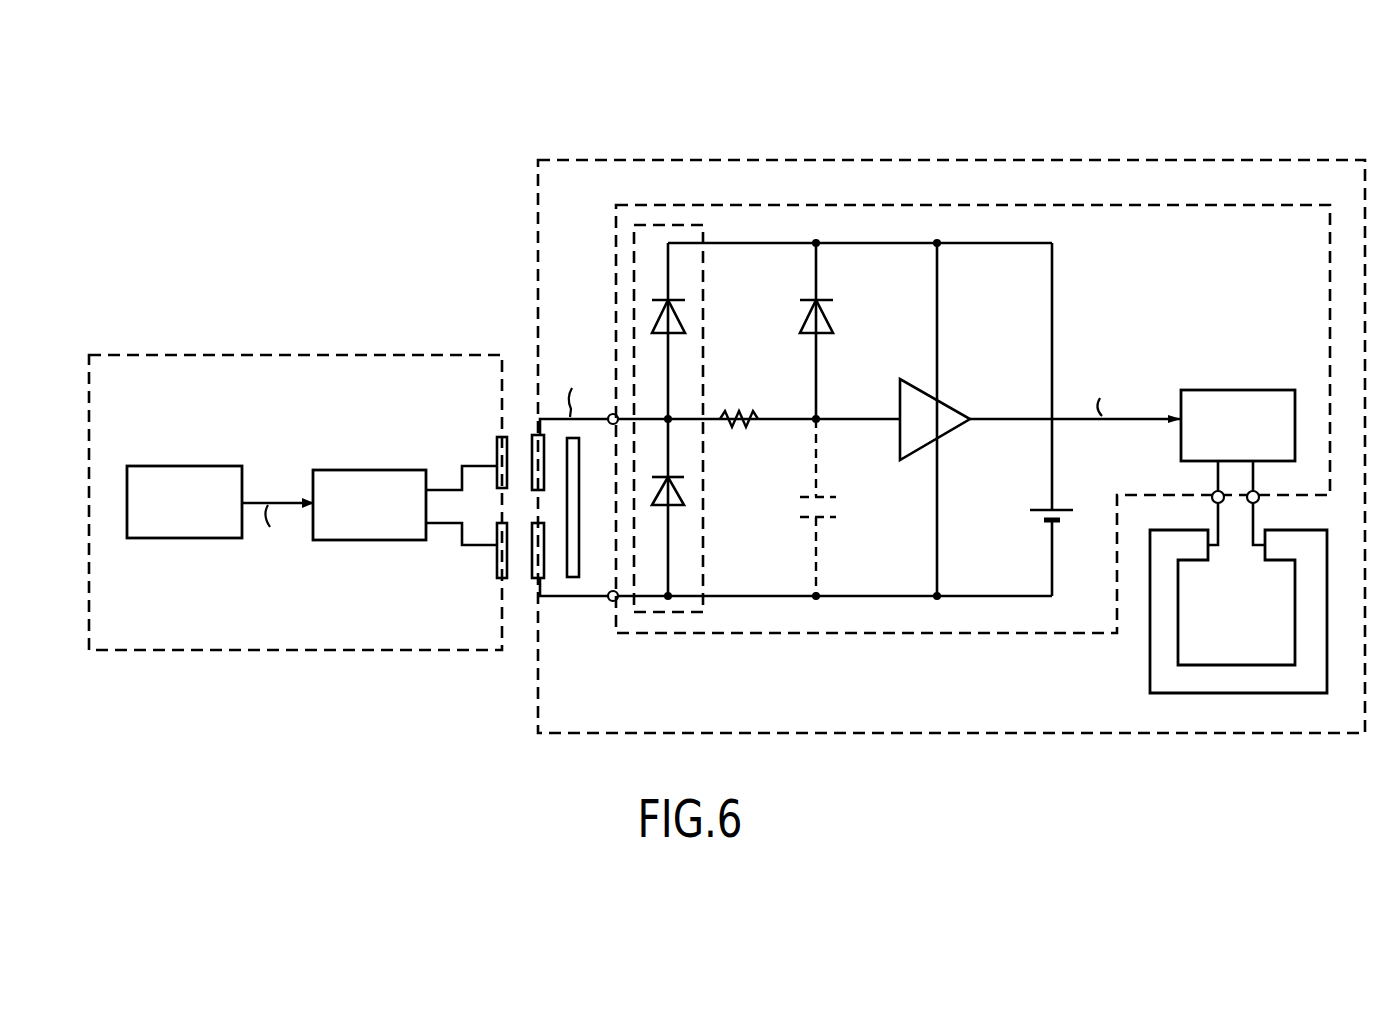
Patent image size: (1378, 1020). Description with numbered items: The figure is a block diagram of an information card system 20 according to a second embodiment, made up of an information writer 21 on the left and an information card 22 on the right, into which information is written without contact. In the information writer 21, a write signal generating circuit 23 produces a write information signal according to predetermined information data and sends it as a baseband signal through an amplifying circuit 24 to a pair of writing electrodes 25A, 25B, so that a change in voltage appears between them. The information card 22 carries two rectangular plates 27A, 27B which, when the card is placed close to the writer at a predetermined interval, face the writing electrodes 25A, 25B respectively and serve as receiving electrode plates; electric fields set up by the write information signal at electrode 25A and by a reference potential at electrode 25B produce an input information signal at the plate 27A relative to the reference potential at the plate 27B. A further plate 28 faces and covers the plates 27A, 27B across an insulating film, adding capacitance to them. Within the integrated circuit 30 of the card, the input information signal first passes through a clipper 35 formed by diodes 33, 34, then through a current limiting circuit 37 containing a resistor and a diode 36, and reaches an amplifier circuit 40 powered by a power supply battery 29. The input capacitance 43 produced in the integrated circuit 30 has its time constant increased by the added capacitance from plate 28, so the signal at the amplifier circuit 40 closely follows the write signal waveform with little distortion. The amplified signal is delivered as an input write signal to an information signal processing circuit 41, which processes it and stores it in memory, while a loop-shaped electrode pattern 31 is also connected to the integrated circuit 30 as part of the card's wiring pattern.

The information card system 20 is at (196, 78).
The information writer 21 is at (118, 355).
The information card 22 is at (588, 160).
The write signal generating circuit 23 is at (172, 539).
The amplifying circuit 24 is at (345, 541).
The writing electrode 25A is at (497, 440).
The writing electrode 25B is at (497, 570).
The plate 27A is at (537, 435).
The plate 27B is at (533, 578).
The plate 28 is at (582, 458).
The power supply battery 29 is at (1040, 508).
The integrated circuit 30 is at (663, 633).
The loop-shaped electrode pattern 31 is at (1150, 681).
The diode 33 is at (672, 316).
The diode 34 is at (685, 498).
The clipper 35 is at (703, 282).
The diode 36 is at (820, 316).
The current limiting circuit 37 is at (842, 352).
The amplifier circuit 40 is at (905, 461).
The information signal processing circuit 41 is at (1229, 390).
The input capacitance 43 is at (828, 520).